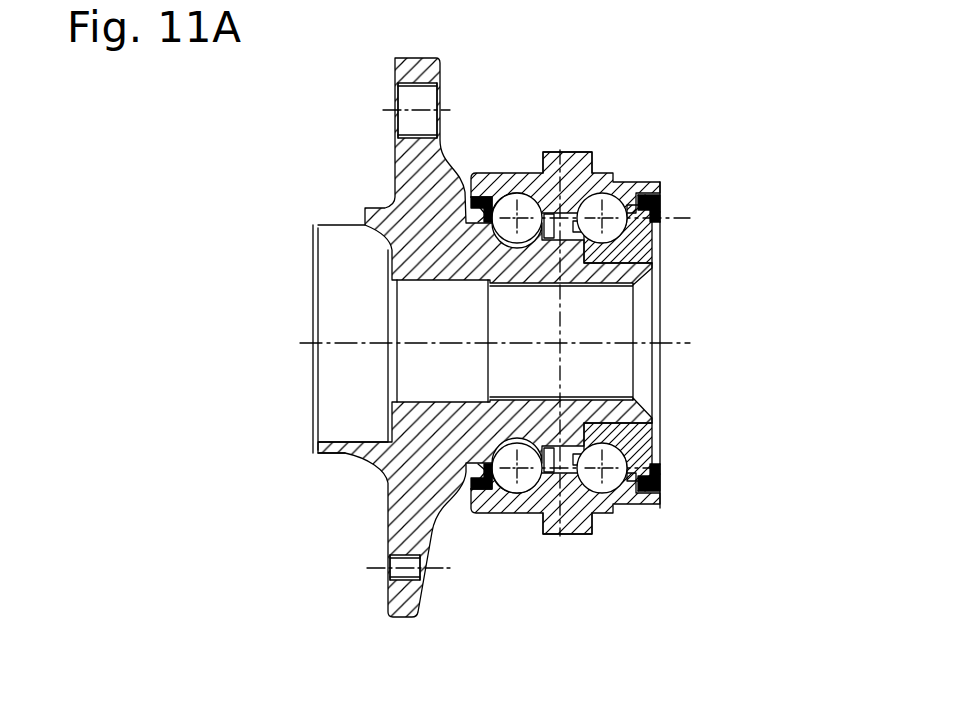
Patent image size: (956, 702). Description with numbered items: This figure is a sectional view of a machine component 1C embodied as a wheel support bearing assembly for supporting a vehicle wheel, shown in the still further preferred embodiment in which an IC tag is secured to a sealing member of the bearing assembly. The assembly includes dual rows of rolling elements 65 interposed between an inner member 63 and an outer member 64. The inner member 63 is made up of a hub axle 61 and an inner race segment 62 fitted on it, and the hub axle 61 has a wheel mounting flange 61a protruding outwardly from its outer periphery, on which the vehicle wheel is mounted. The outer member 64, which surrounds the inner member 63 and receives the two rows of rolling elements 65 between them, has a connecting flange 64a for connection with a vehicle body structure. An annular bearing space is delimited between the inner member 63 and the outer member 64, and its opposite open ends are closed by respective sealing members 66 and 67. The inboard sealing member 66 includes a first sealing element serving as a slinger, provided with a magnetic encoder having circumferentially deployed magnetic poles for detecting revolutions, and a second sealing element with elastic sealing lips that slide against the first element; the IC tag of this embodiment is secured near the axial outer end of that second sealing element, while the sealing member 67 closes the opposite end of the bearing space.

The machine component 1C is at (350, 513).
The hub axle 61 is at (415, 252).
The wheel mounting flange 61a is at (398, 62).
The inner race segment 62 is at (600, 279).
The inner member 63 is at (222, 300).
The outer member 64 is at (553, 168).
The connecting flange 64a is at (575, 152).
The rolling elements 65 is at (522, 195).
The inboard sealing member 66 is at (664, 208).
The sealing member 67 is at (470, 216).